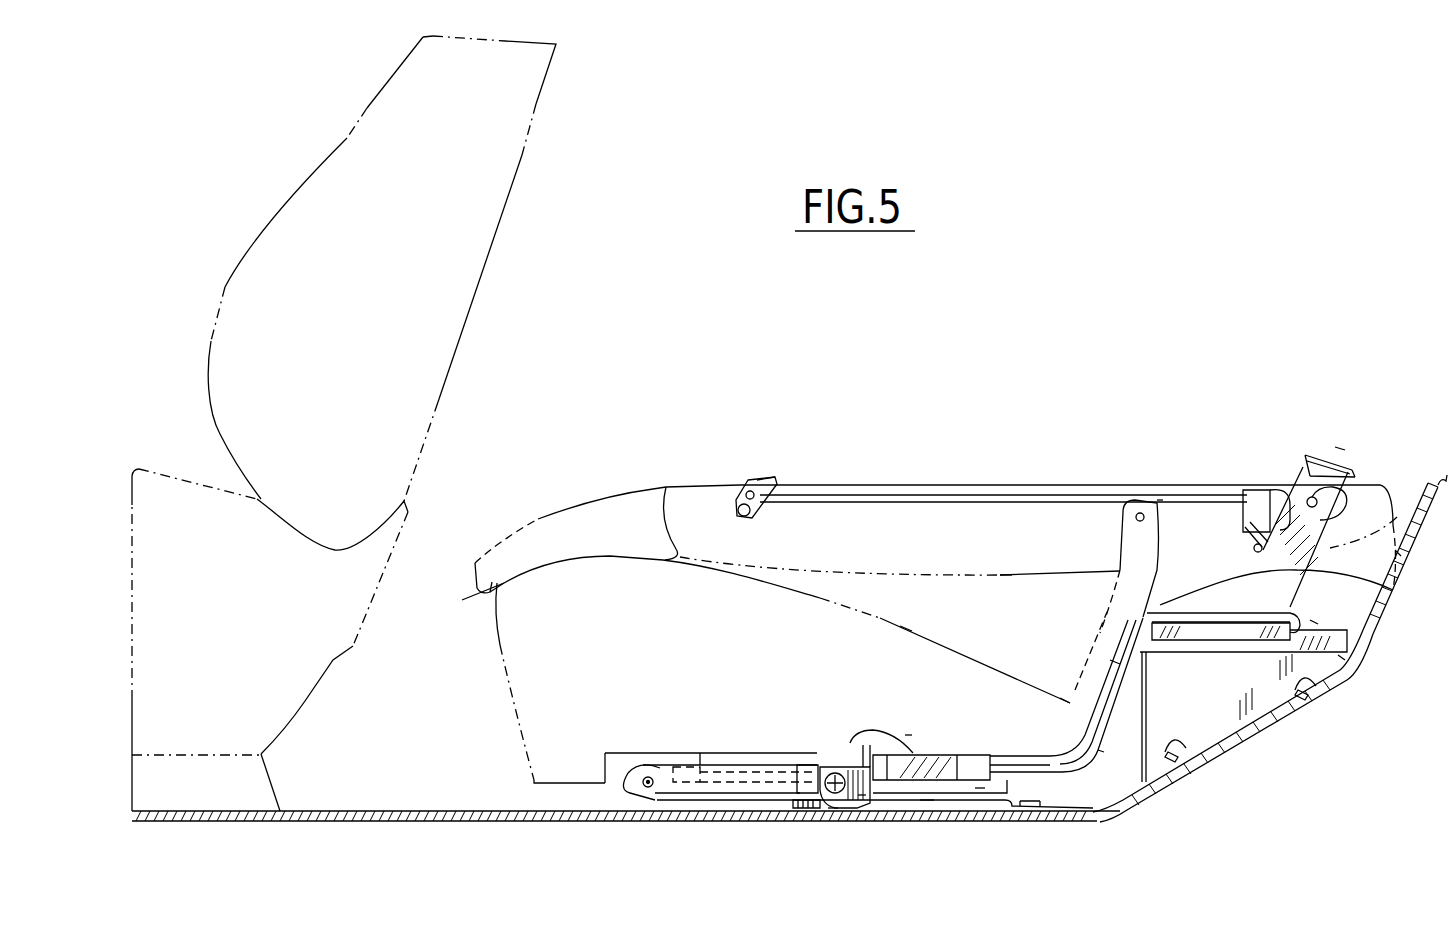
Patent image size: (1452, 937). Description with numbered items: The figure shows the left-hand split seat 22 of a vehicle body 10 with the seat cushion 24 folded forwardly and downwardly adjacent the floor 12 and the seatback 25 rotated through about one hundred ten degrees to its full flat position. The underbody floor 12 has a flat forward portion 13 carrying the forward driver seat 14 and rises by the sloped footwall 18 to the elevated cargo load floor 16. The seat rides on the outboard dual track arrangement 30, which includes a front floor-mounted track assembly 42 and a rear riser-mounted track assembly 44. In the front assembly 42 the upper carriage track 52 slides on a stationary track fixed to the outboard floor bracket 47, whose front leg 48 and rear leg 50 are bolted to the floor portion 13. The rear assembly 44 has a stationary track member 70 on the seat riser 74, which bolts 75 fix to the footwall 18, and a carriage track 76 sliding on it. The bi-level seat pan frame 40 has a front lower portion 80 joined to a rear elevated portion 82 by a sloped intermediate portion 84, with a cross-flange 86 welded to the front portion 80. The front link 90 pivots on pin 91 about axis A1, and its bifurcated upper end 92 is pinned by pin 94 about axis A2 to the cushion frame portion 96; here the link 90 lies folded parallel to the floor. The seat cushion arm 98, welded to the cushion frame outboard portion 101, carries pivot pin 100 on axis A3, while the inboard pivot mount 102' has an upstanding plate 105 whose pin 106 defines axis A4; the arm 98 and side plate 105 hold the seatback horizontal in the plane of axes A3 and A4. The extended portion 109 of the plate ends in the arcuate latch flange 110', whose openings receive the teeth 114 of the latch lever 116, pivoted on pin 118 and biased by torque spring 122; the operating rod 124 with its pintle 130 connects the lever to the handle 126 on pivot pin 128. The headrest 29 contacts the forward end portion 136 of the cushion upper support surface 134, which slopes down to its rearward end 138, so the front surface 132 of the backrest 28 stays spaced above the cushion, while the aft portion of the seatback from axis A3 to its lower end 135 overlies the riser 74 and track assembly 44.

The vehicle body 10 is at (1193, 792).
The underbody floor 12 is at (381, 810).
The forward portion of floor 13 is at (328, 811).
The forward passenger or driver seat 14 is at (500, 218).
The cargo load floor 16 is at (1434, 478).
The footwall 18 is at (1140, 797).
The left-hand split seat 22 is at (908, 425).
The seat cushion 24 is at (500, 680).
The left-hand seatback 25 is at (893, 585).
The backrest member 28 is at (693, 482).
The headrest member 29 is at (538, 519).
The outboard dual track arrangement 30 is at (573, 800).
The bi-level seat pan frame 40 is at (1107, 750).
The front floor-mounted track assembly 42 is at (908, 733).
The rear riser-mounted track assembly 44 is at (1313, 622).
The outboard floor bracket 47 is at (927, 800).
The front leg 48 is at (833, 808).
The rear leg 50 is at (1002, 808).
The upper carriage track 52 is at (918, 768).
The lower U-shaped stationary track member 70 is at (1298, 645).
The outboard seat riser 74 is at (1340, 658).
The bolts 75 is at (1300, 695).
The upper channel-shaped carriage track 76 is at (1172, 633).
The front lower frame portion 80 is at (1013, 757).
The rear elevated frame portion 82 is at (1232, 620).
The intermediate pan frame portion 84 is at (1117, 667).
The cross-flange 86 is at (883, 753).
The outboard front link 90 is at (730, 763).
The pivot pin 91 is at (822, 767).
The upper bifurcated end 92 is at (862, 795).
The pivot pin 94 is at (647, 779).
The seat cushion frame portion 96 is at (622, 760).
The seat cushion arm 98 is at (1127, 537).
The pivot pin 100 is at (1163, 497).
The seat cushion frame outboard portion 101 is at (980, 788).
The inboard seatback rear angle pivot mount 102' is at (1341, 419).
The upstanding plate 105 is at (1393, 589).
The pivot pin 106 is at (1322, 512).
The extended-length portion 109 is at (1303, 467).
The latch flange 110' is at (1364, 423).
The latching teeth 114 is at (1280, 487).
The seatback latch lever 116 is at (1237, 480).
The latch pivot pin 118 is at (1254, 548).
The wire torque spring 122 is at (1240, 532).
The operating rod 124 is at (985, 495).
The operating handle 126 is at (764, 480).
The pivot pin 128 is at (744, 505).
The right-angle pintle 130 is at (761, 509).
The seatback front surface 132 is at (1008, 578).
The upper support surface 134 is at (912, 622).
The seat lower end 135 is at (1401, 556).
The forward end portion 136 is at (480, 588).
The rearward end 138 is at (1076, 688).
The first transverse pin axis A1 is at (837, 773).
The second transverse pivot axis A2 is at (651, 780).
The third transverse axis A3 is at (1138, 512).
The fourth transverse axis A4 is at (1318, 500).